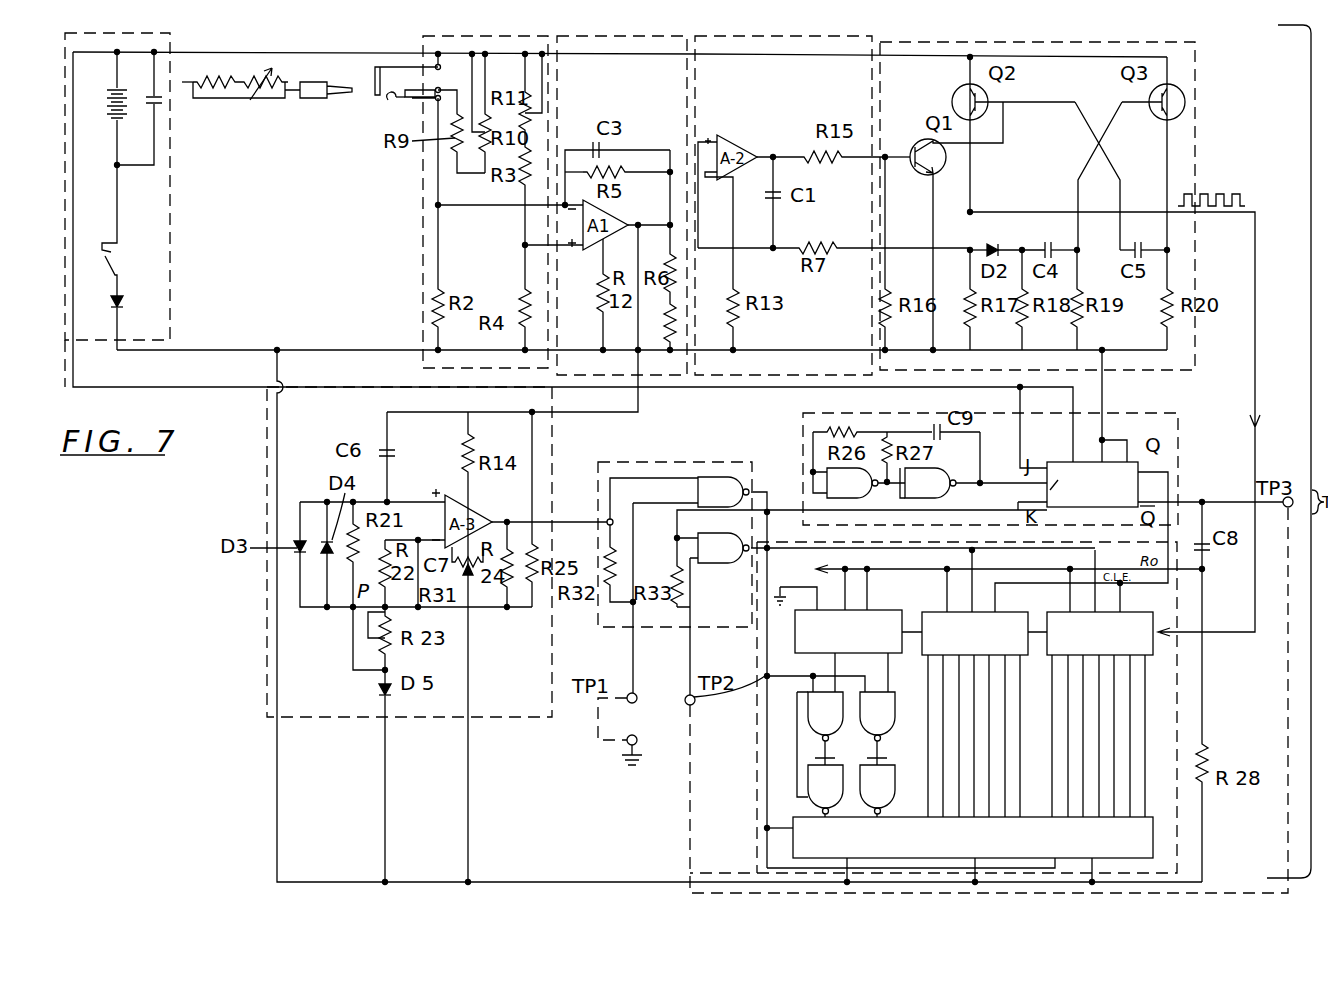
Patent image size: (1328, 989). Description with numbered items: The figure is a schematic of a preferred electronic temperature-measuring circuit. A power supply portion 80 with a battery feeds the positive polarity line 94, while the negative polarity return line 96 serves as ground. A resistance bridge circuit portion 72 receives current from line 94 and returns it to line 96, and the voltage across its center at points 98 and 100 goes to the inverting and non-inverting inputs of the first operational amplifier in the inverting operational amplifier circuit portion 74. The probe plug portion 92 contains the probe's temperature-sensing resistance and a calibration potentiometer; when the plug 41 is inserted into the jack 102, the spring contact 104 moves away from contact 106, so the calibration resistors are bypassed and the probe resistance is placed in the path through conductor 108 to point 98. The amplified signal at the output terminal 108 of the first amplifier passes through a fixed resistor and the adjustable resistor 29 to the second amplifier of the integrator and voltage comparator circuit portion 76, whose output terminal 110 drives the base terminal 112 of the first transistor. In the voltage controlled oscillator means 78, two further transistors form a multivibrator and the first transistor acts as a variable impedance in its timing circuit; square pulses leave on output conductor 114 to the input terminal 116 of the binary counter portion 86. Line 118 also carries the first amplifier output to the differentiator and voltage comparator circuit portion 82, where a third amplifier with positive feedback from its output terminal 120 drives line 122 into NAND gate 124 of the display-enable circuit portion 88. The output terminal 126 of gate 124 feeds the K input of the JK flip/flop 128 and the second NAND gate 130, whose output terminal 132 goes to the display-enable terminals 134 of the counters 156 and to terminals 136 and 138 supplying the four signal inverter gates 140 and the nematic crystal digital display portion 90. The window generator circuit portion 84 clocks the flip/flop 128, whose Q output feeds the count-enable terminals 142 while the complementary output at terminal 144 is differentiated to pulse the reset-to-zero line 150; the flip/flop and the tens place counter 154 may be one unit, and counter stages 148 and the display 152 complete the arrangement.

The power supply portion 80 is at (112, 36).
The positive polarity line 94 is at (251, 51).
The probe plug portion 92 is at (248, 105).
The plug 41 is at (325, 75).
The conductor / output terminal of amplifier A1 108 is at (391, 64).
The contact 106 is at (420, 78).
The spring contact 104 is at (411, 109).
The jack 102 is at (382, 115).
The bridge center point 98 is at (439, 206).
The bridge center point 100 is at (523, 245).
The resistance bridge circuit portion 72 is at (470, 37).
The bridge signal inverting operational amplifier circuit portion 74 is at (596, 37).
The integrator and voltage comparator circuit portion 76 is at (745, 37).
The voltage controlled oscillator means 78 is at (1008, 40).
The output terminal of amplifier A2 110 is at (773, 157).
The base terminal of transistor Q1 112 is at (886, 156).
The output conductor 114 is at (1212, 208).
The adjustable resistor R29 29 is at (676, 330).
The negative polarity return line 96 is at (253, 354).
The differentiator and voltage comparator circuit portion 82 is at (328, 370).
The window generator circuit portion 84 is at (1112, 418).
The line 118 is at (563, 413).
The display-enable circuit portion 88 is at (672, 462).
The output terminal of NAND gate 124 126 is at (771, 510).
The signal inverter gates 140 is at (983, 485).
The JK flip/flop 128 is at (1092, 484).
The terminal 144 is at (1206, 498).
The amplifier output terminal 120 is at (508, 521).
The line 122 is at (575, 521).
The NAND gate 124 is at (723, 492).
The second NAND gate 130 is at (713, 548).
The binary counter portion 86 is at (796, 545).
The output terminal of NAND gate 130 132 is at (989, 566).
The reset-to-zero line 150 is at (933, 569).
The display-enable terminals 134 is at (973, 610).
The counter 148 is at (971, 716).
The count-enable terminals 142 is at (1064, 716).
The counters 156 is at (992, 651).
The tens place counter 154 is at (838, 646).
The input terminal of counting circuit 116 is at (1163, 634).
The terminal 136 is at (762, 690).
The terminal 138 is at (765, 826).
The nematic crystal digital display portion 90 is at (757, 838).
The display 152 is at (847, 872).